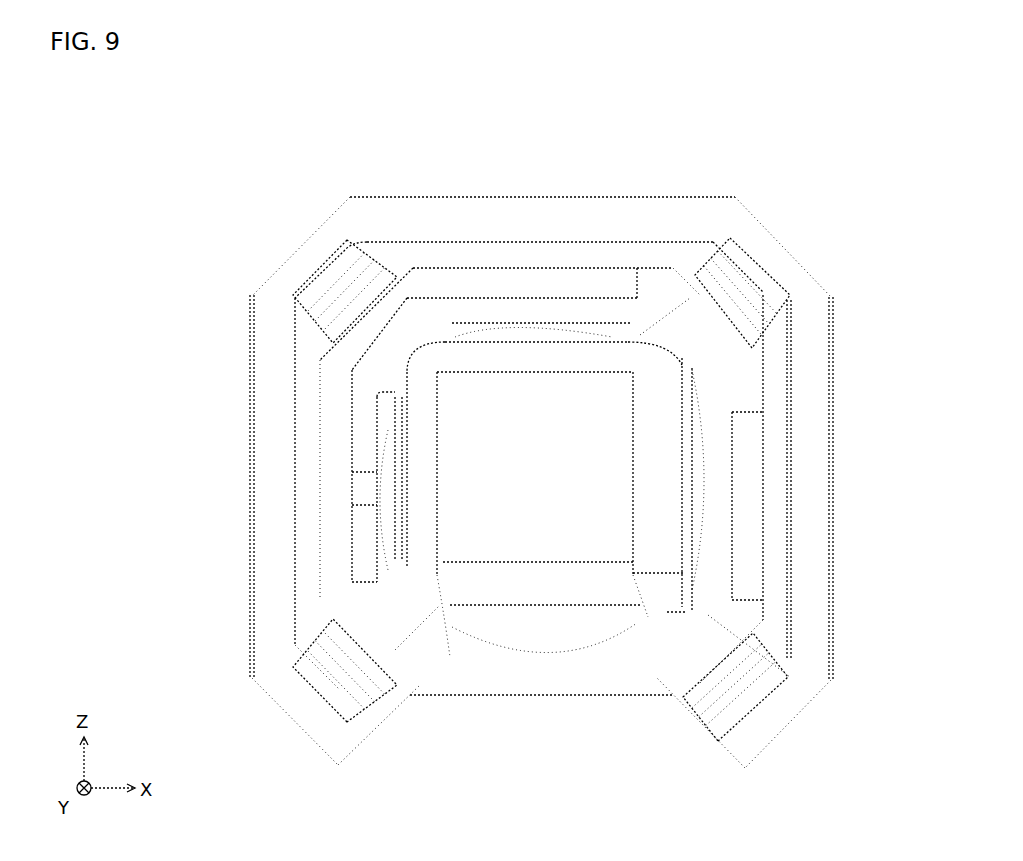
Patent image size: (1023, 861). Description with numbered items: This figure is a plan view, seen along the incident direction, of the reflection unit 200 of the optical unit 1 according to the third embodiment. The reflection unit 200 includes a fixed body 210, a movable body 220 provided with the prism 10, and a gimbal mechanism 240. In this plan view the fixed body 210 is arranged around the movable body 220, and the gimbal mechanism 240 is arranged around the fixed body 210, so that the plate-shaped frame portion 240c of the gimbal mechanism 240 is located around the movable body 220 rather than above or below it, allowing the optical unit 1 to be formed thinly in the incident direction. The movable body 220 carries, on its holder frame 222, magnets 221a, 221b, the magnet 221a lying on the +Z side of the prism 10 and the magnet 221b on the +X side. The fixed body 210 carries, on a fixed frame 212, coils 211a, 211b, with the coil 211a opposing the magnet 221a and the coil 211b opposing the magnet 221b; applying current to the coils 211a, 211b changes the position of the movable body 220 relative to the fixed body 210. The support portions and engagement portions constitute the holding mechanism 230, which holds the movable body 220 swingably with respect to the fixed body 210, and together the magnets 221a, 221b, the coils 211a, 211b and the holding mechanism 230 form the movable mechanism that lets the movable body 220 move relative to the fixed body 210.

The optical unit 1 is at (611, 439).
The reflection unit 200 is at (541, 482).
The prism 10 is at (521, 593).
The fixed body 210 is at (439, 434).
The coil 211a is at (546, 356).
The coil 211b is at (396, 425).
The fixed frame 212 is at (827, 556).
The movable body 220 is at (777, 485).
The magnet 221a is at (522, 236).
The magnet 221b is at (278, 462).
The holder frame 222 is at (802, 490).
The holding mechanism 230 is at (547, 482).
The gimbal mechanism 240 is at (529, 411).
The frame portion 240c is at (866, 480).